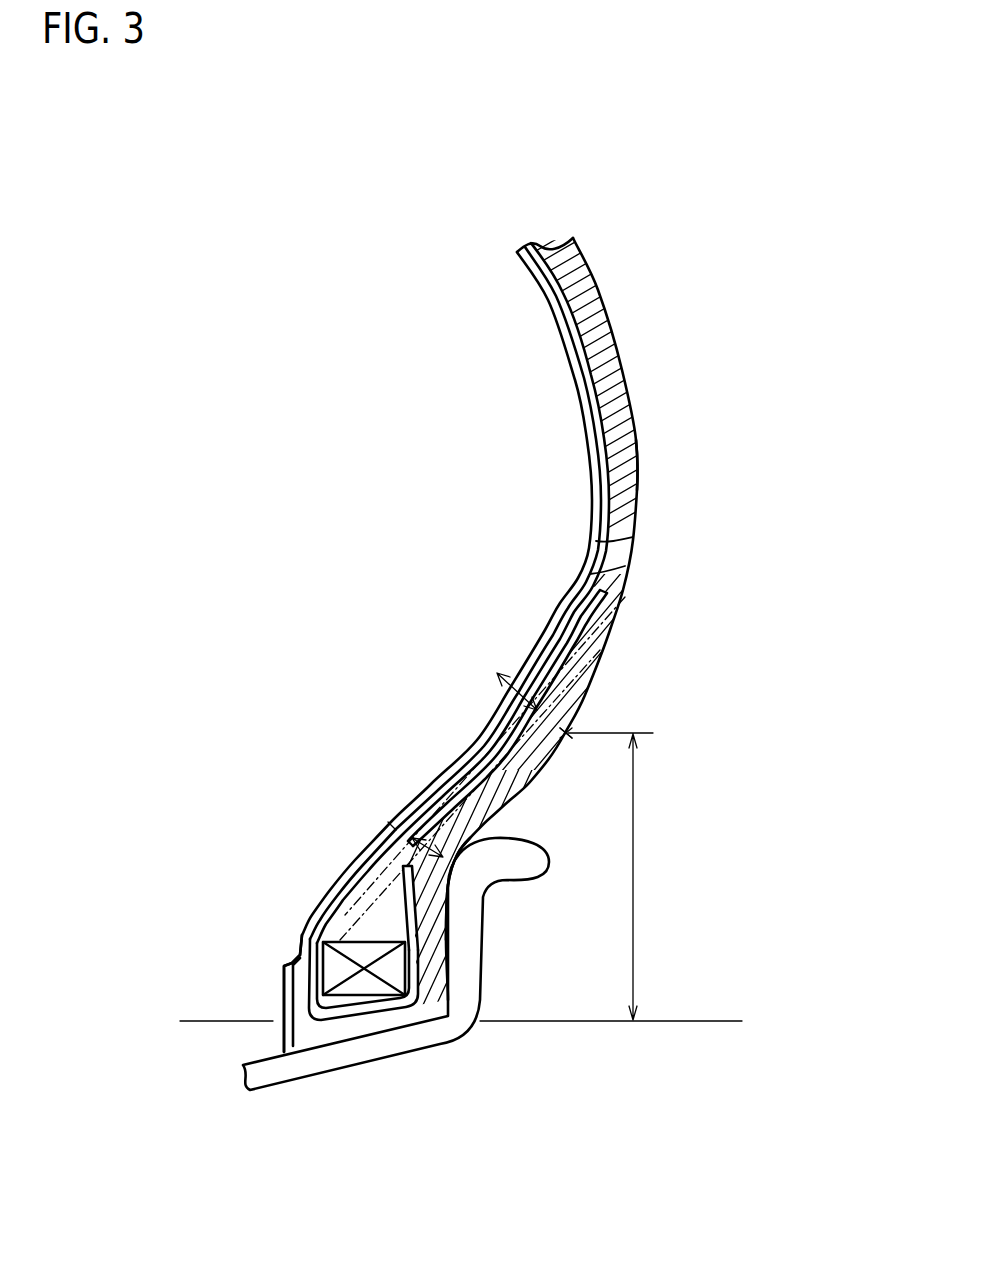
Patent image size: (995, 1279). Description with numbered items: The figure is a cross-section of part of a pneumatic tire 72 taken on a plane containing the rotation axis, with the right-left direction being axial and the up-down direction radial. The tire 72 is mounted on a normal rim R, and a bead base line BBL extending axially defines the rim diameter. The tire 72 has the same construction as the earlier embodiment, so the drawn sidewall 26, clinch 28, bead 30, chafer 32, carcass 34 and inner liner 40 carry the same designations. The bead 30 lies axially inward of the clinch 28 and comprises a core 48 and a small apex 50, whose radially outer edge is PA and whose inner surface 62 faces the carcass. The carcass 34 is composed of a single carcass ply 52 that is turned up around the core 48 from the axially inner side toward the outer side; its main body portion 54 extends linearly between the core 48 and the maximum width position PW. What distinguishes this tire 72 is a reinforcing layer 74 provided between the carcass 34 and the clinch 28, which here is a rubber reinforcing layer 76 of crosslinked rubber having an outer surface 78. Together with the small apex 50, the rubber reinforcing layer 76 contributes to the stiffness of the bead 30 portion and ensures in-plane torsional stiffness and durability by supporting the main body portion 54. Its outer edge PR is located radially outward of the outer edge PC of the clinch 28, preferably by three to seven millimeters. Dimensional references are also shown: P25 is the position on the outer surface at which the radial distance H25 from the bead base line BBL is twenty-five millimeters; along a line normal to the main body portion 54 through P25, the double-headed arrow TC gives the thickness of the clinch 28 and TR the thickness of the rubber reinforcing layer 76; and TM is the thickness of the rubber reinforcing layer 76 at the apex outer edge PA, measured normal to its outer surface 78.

The pneumatic tire 72 is at (720, 174).
The sidewall 26 is at (628, 439).
The clinch 28 is at (500, 800).
The bead 30 is at (304, 916).
The chafer 32 is at (288, 1027).
The carcass 34 is at (583, 526).
The inner liner 40 is at (576, 459).
The core 48 is at (333, 972).
The apex 50 is at (322, 893).
The carcass ply 52 is at (429, 787).
The main body portion 54 is at (473, 728).
The inner surface of the apex 62 is at (380, 835).
The reinforcing layer 74 is at (485, 705).
The rubber reinforcing layer 76 is at (470, 738).
The outer surface of the rubber reinforcing layer 78 is at (485, 893).
The rim R is at (472, 1029).
The bead base line BBL is at (672, 1022).
The distance H25 is at (624, 876).
The position P25 is at (567, 736).
The maximum width position PW is at (639, 466).
The outer edge of the rubber reinforcing layer PR is at (634, 537).
The outer edge of the clinch PC is at (626, 566).
The thickness of the rubber reinforcing layer TR is at (497, 673).
The thickness of the clinch TC is at (568, 732).
The thickness of the rubber reinforcing layer at the apex outer edge TM is at (432, 800).
The outer edge of the apex PA is at (392, 826).